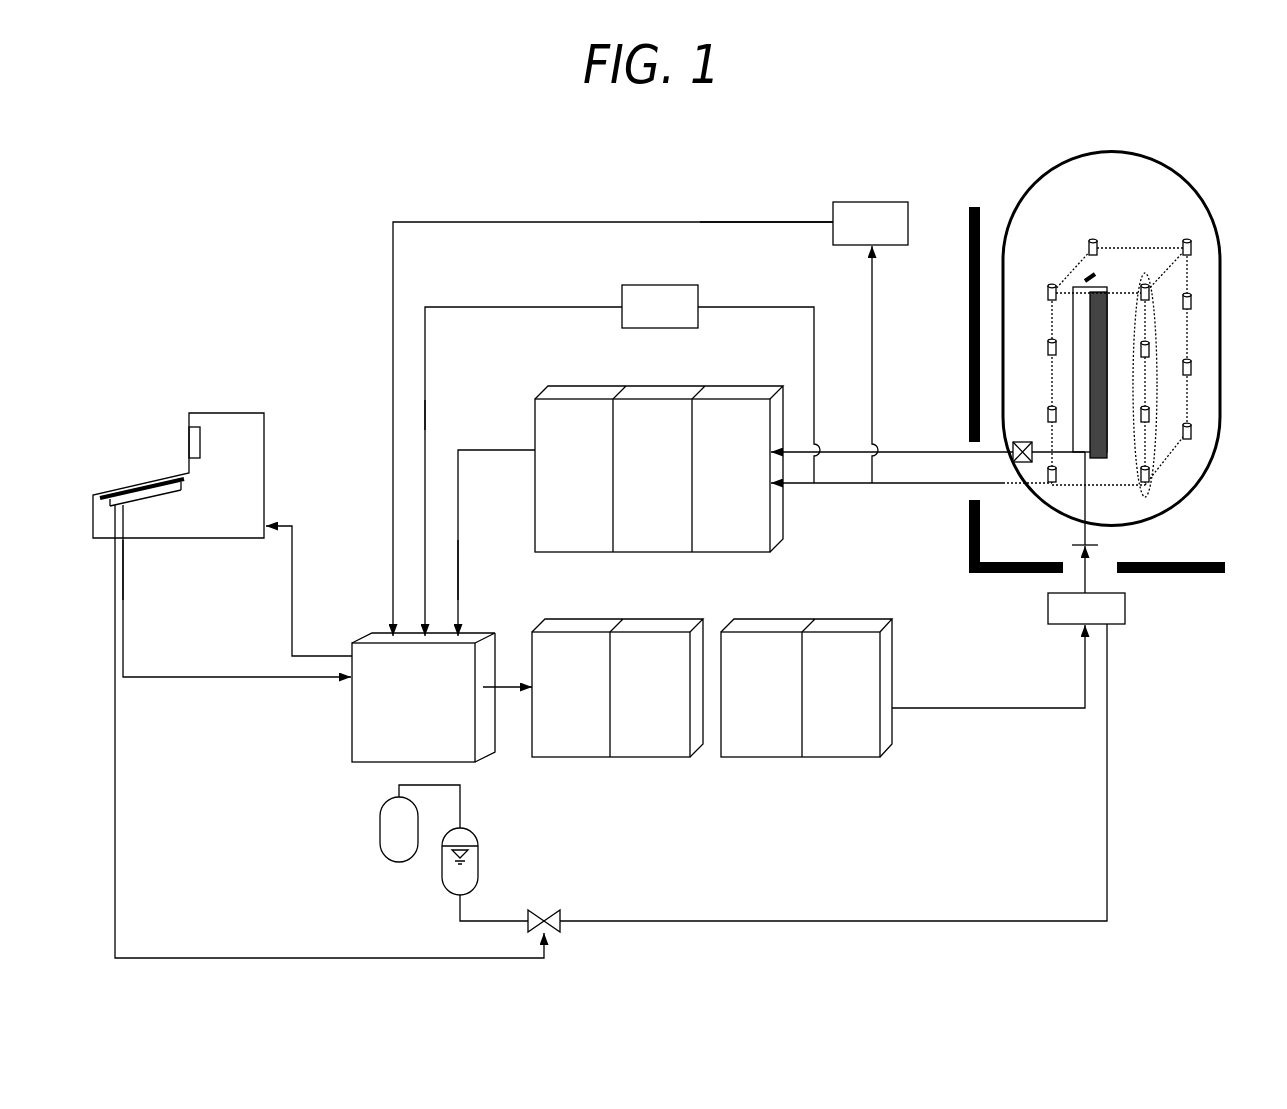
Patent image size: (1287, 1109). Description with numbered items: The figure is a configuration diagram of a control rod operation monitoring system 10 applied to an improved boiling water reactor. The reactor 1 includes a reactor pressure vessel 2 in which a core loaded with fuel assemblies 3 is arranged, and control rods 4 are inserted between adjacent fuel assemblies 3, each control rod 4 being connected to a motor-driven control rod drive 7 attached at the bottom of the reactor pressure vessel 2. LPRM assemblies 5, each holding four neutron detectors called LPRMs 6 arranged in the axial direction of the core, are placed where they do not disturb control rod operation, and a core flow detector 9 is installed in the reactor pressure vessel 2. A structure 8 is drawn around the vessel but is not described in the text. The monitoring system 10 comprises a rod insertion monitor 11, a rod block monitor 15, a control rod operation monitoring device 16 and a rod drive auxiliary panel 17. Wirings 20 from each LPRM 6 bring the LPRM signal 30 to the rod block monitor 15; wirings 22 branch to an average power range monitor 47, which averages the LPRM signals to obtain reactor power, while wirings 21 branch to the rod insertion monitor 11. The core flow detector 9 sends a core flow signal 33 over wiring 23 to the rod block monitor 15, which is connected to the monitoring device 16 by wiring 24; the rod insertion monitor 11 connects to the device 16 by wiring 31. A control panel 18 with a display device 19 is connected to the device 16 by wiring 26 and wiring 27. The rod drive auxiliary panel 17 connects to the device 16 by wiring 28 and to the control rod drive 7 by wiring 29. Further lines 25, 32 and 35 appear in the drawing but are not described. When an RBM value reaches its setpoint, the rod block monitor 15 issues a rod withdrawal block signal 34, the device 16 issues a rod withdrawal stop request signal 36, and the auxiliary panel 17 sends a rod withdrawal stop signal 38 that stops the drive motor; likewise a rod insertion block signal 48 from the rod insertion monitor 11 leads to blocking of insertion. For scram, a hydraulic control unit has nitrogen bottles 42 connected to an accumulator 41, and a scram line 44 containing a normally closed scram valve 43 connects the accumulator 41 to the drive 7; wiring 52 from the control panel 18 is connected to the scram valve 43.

The reactor 1 is at (1124, 351).
The reactor pressure vessel 2 is at (1046, 172).
The fuel assembly 3 is at (1100, 470).
The control rod 4 is at (1073, 320).
The LPRM assembly 5 is at (1157, 450).
The local power range monitoring system (LPRM) 6 is at (1049, 292).
The control rod drive (CRD) 7 is at (1125, 610).
The containment wall 8 is at (968, 305).
The core flow detector 9 is at (1025, 442).
The control rod operation monitoring system 10 is at (463, 190).
The rod insertion monitor 11 is at (684, 285).
The rod block monitor 15 is at (588, 386).
The control rod operation monitoring device 16 is at (352, 727).
The rod drive auxiliary panel 17 is at (786, 726).
The control panel 18 is at (188, 442).
The display device 19 is at (189, 441).
The wiring 20 is at (845, 484).
The wiring 21 is at (814, 357).
The wiring 22 is at (872, 360).
The wiring 23 is at (840, 452).
The wiring 24 is at (484, 450).
The signal line 25 is at (632, 222).
The wiring 26 is at (190, 677).
The wiring 27 is at (292, 624).
The wiring 28 is at (508, 686).
The wiring 29 is at (960, 708).
The LPRM signal 30 is at (920, 470).
The wiring 31 is at (425, 360).
The signal line 32 is at (754, 222).
The core flow signal 33 is at (902, 452).
The rod withdrawal block signal 34 is at (458, 565).
The signal line 35 is at (123, 580).
The rod withdrawal stop request signal 36 is at (505, 700).
The rod withdrawal stop signal 38 is at (1025, 708).
The accumulator 41 is at (478, 860).
The nitrogen bottle 42 is at (378, 804).
The scram valve 43 is at (546, 912).
The scram line 44 is at (1107, 752).
The average power range monitor (APRM) 47 is at (880, 202).
The rod insertion block signal 48 is at (425, 414).
The wiring 52 is at (115, 830).